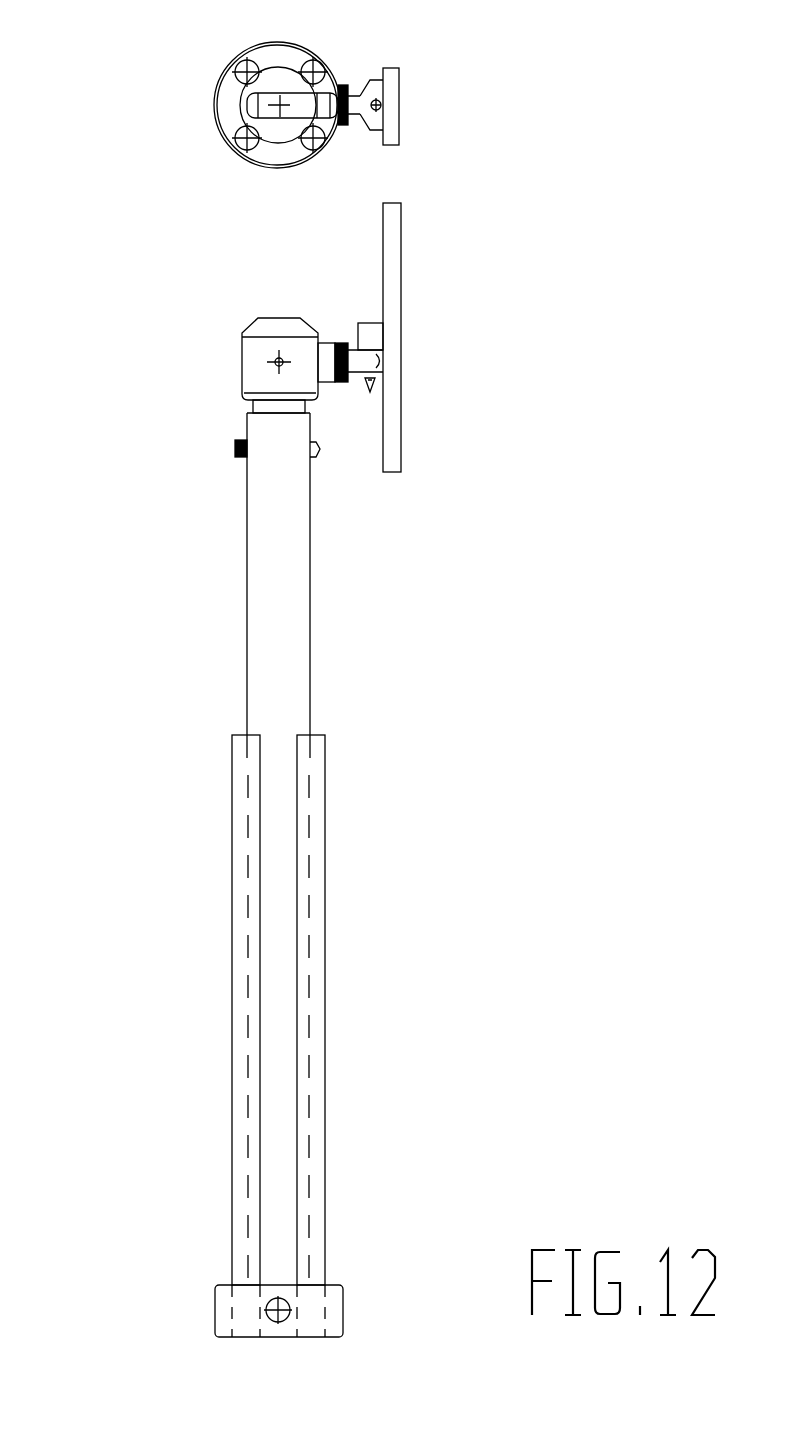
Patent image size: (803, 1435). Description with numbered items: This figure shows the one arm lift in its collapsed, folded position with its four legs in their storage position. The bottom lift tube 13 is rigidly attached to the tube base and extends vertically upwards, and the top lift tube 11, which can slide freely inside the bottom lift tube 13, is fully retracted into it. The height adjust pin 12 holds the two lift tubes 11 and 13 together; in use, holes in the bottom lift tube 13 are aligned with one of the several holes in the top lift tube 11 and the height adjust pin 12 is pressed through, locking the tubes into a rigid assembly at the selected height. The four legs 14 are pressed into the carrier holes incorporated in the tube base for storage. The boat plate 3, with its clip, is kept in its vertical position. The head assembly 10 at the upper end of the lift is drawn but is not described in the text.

The boat plate 3 is at (480, 343).
The head housing 10 is at (230, 339).
The top lift tube 11 is at (181, 389).
The height adjust pin 12 is at (152, 485).
The bottom lift tube 13 is at (368, 585).
The legs 14 is at (285, 669).